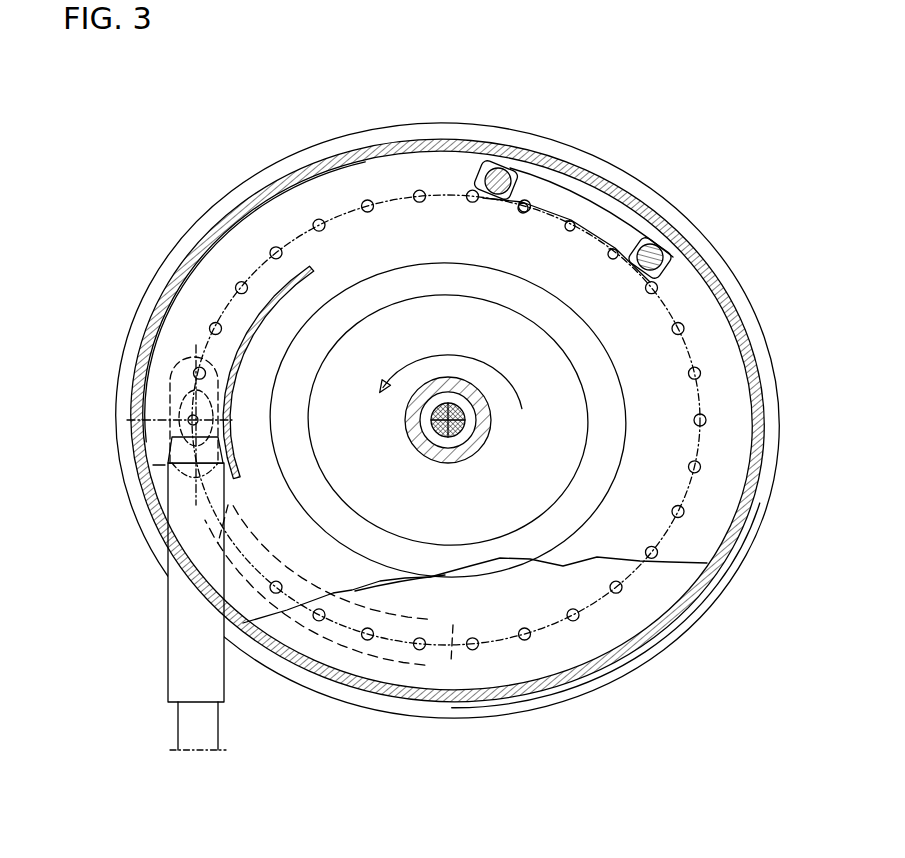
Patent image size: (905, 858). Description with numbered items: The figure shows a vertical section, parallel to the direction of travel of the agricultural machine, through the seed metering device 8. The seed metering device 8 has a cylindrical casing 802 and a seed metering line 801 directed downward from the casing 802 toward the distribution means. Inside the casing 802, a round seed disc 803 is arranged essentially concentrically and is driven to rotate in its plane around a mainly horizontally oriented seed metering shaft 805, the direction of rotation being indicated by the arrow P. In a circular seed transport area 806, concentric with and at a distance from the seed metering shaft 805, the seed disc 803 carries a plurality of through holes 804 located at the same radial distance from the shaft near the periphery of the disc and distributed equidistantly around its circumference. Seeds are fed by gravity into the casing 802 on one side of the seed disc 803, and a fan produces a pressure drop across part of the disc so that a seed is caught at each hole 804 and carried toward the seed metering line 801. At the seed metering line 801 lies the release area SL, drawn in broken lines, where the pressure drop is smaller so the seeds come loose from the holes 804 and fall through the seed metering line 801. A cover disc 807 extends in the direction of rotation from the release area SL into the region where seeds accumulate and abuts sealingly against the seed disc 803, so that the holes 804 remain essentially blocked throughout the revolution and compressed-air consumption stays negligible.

The seed metering device 8 is at (645, 130).
The seed metering line 801 is at (219, 669).
The cylindrical casing 802 is at (632, 193).
The seed disc 803 is at (455, 160).
The through holes 804 is at (368, 201).
The seed metering shaft 805 is at (445, 437).
The seed transport area 806 is at (352, 214).
The cover disc 807 is at (410, 663).
The release area SL is at (183, 360).
The rotation direction P is at (442, 391).